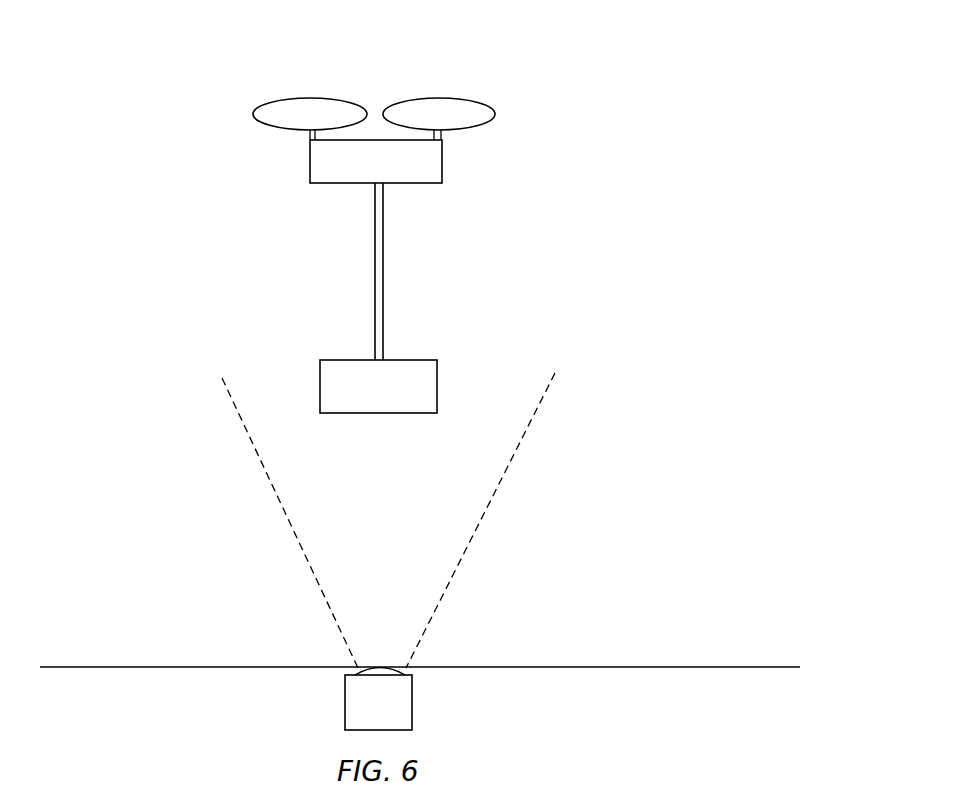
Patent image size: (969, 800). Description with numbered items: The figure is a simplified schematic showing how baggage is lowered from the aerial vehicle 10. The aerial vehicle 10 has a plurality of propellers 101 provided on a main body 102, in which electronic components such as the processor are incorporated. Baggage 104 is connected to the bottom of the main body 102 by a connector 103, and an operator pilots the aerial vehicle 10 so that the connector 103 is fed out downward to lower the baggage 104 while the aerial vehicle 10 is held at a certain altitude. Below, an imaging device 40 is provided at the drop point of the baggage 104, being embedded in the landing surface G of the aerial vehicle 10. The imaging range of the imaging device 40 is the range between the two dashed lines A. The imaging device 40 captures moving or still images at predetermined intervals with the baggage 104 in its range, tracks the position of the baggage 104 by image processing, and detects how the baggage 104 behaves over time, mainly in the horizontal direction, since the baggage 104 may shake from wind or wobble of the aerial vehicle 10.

The aerial vehicle 10 is at (547, 166).
The propellers 101 is at (297, 95).
The main body 102 is at (427, 157).
The connector 103 is at (387, 260).
The baggage 104 is at (427, 368).
The imaging device 40 is at (345, 702).
The dashed lines A is at (232, 402).
The landing surface G is at (600, 667).